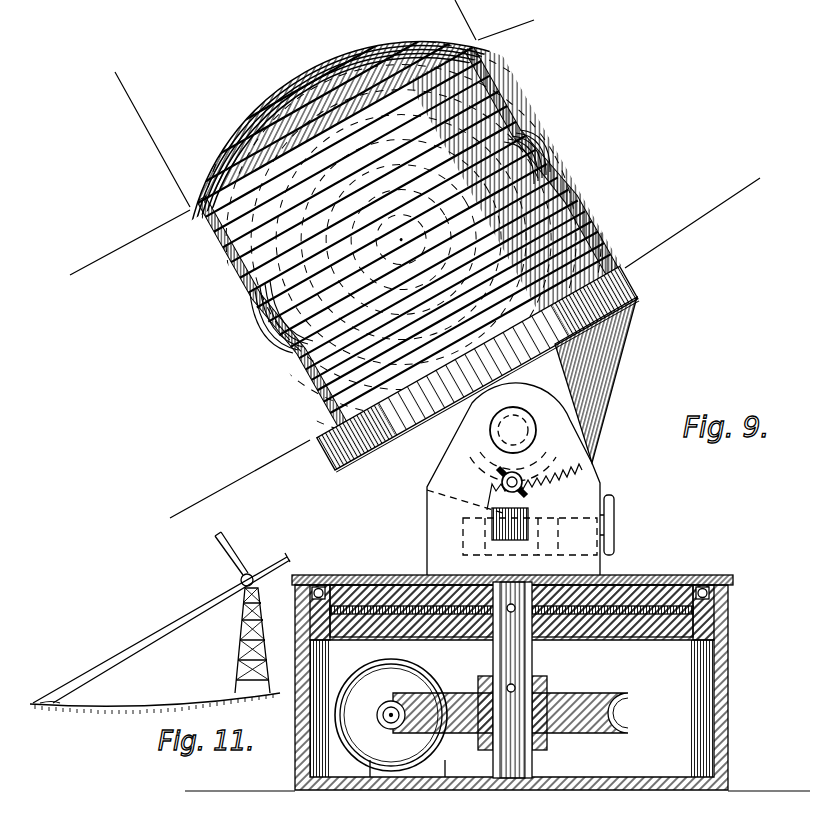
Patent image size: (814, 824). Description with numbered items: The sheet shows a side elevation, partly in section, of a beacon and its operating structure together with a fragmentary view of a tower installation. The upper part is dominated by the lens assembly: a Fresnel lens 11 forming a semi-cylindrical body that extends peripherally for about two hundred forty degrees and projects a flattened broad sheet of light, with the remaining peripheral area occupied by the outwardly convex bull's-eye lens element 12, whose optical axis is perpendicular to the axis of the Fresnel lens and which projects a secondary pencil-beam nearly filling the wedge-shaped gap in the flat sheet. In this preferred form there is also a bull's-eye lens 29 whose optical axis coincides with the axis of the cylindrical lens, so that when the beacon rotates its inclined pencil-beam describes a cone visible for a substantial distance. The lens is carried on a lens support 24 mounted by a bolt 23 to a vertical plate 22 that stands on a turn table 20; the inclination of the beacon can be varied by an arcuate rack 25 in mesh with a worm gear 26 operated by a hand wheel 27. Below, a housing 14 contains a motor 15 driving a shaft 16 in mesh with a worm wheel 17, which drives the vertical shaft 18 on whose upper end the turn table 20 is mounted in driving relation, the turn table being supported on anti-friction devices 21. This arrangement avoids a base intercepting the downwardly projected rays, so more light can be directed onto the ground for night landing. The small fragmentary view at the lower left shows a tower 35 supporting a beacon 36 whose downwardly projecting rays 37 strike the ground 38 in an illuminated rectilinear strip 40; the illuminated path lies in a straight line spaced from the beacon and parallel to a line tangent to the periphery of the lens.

In FIG. 9, the Fresnel lens 11 is at (421, 299).
In FIG. 9, the bull's-eye lens element 12 is at (550, 153).
In FIG. 9, the housing 14 is at (723, 650).
In FIG. 9, the motor 15 is at (392, 667).
In FIG. 9, the shaft 16 is at (391, 712).
In FIG. 9, the worm wheel 17 is at (607, 697).
In FIG. 9, the vertical shaft 18 is at (520, 647).
In FIG. 9, the turn table 20 is at (653, 578).
In FIG. 9, the anti-friction devices 21 is at (717, 607).
In FIG. 9, the vertical plate 22 is at (587, 490).
In FIG. 9, the bolt 23 is at (518, 428).
In FIG. 9, the lens support 24 is at (597, 357).
In FIG. 9, the arcuate rack 25 is at (570, 473).
In FIG. 9, the worm gear 26 is at (500, 530).
In FIG. 9, the hand wheel 27 is at (615, 523).
In FIG. 9, the bull's-eye lens 29 is at (419, 299).
In FIG. 11, the tower 35 is at (247, 657).
In FIG. 11, the beacon 36 is at (247, 574).
In FIG. 11, the downwardly projecting rays 37 is at (176, 624).
In FIG. 11, the ground 38 is at (142, 707).
In FIG. 11, the illuminated rectilinear strip 40 is at (52, 702).